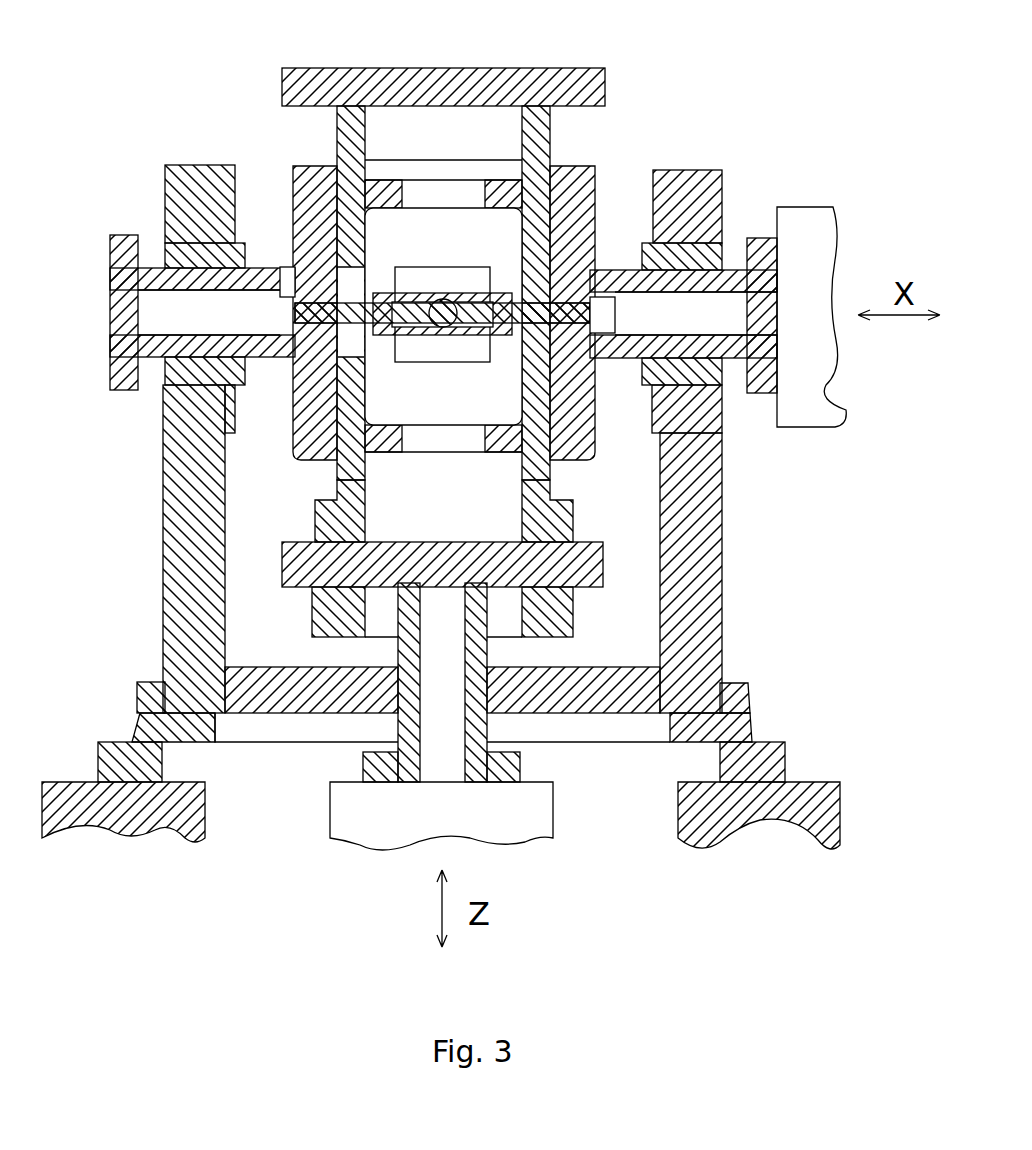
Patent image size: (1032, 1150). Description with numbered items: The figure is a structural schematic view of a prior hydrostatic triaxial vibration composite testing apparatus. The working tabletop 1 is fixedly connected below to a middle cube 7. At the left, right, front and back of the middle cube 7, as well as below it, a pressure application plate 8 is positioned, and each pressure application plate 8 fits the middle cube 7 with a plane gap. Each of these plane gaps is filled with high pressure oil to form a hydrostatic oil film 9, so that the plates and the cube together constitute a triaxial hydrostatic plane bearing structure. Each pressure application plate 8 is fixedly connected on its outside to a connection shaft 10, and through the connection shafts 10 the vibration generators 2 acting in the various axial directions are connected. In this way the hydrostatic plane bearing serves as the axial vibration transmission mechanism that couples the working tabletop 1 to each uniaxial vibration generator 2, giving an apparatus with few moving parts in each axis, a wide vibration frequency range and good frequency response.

The working tabletop 1 is at (350, 80).
The vibration generator 2 is at (802, 215).
The middle cube 7 is at (340, 157).
The pressure application plate 8 is at (308, 200).
The hydrostatic oil film 9 is at (333, 400).
The connection shaft 10 is at (623, 277).